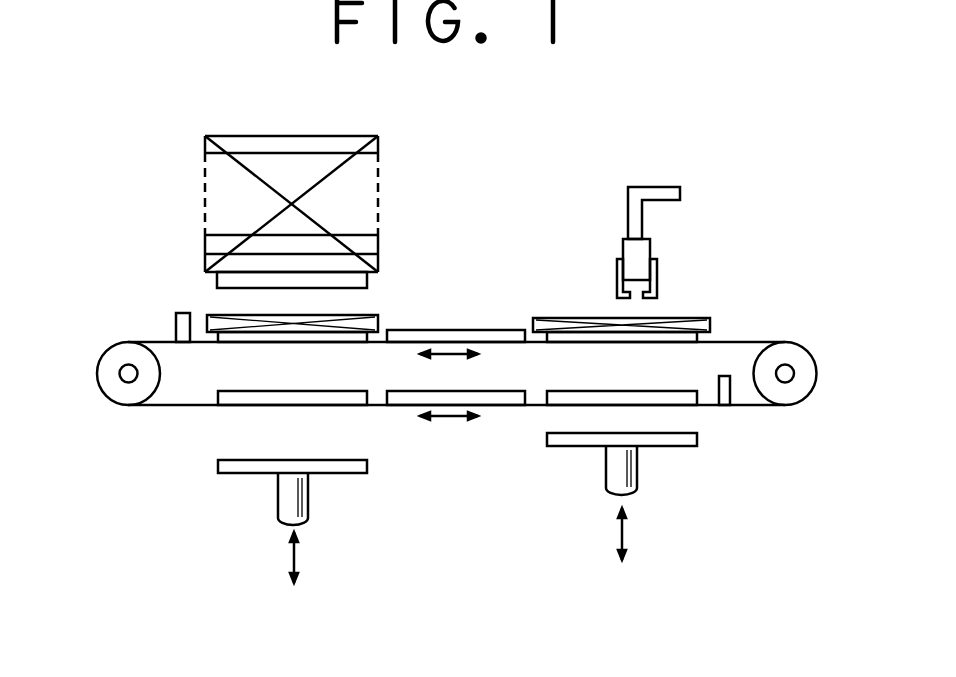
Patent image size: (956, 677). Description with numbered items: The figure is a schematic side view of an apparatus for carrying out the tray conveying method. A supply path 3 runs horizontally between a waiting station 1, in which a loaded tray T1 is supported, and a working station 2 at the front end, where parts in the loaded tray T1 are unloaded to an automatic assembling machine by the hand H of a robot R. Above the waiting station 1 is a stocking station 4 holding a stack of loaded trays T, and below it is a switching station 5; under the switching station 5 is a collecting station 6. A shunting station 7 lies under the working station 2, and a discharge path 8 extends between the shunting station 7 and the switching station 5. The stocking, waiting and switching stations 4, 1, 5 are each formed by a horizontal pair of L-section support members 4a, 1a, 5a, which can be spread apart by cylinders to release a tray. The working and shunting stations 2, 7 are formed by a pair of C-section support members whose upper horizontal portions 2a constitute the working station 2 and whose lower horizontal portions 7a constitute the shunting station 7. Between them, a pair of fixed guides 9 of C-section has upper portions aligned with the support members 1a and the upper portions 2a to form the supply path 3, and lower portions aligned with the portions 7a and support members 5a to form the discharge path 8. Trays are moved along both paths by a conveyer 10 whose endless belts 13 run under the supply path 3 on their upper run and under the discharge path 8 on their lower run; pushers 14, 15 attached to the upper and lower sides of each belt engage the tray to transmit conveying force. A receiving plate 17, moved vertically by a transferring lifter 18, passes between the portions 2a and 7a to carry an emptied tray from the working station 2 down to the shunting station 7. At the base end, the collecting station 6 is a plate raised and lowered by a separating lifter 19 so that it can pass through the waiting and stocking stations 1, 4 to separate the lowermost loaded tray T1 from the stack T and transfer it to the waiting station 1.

The stack of loaded trays T is at (205, 153).
The loaded tray T1 is at (323, 318).
The robot R is at (658, 186).
The hand H is at (657, 273).
The waiting station 1 is at (225, 332).
The support members 1a is at (345, 340).
The working station 2 is at (705, 340).
The upper horizontal portions 2a is at (572, 340).
The supply path 3 is at (440, 330).
The stocking station 4 is at (311, 271).
The support members 4a is at (322, 281).
The switching station 5 is at (238, 388).
The support members 5a is at (265, 400).
The collecting station 6 is at (332, 458).
The shunting station 7 is at (652, 387).
The lower horizontal portions 7a is at (572, 400).
The discharge path 8 is at (502, 407).
The fixed guides 9 is at (482, 330).
The conveyer 10 is at (112, 346).
The endless belts 13 is at (767, 348).
The pushers 14 is at (177, 322).
The pushers 15 is at (723, 376).
The receiving plate 17 is at (673, 446).
The transferring lifter 18 is at (610, 480).
The separating lifter 19 is at (287, 502).